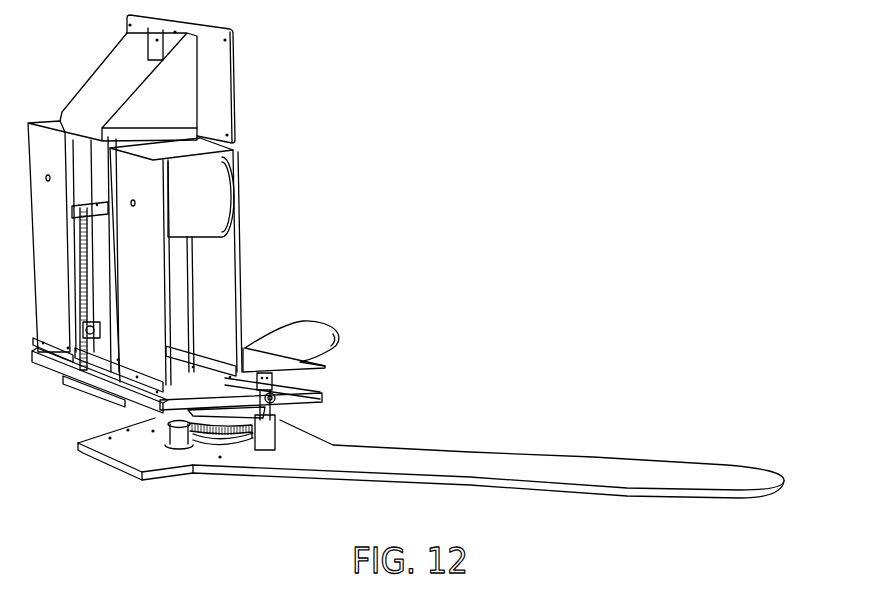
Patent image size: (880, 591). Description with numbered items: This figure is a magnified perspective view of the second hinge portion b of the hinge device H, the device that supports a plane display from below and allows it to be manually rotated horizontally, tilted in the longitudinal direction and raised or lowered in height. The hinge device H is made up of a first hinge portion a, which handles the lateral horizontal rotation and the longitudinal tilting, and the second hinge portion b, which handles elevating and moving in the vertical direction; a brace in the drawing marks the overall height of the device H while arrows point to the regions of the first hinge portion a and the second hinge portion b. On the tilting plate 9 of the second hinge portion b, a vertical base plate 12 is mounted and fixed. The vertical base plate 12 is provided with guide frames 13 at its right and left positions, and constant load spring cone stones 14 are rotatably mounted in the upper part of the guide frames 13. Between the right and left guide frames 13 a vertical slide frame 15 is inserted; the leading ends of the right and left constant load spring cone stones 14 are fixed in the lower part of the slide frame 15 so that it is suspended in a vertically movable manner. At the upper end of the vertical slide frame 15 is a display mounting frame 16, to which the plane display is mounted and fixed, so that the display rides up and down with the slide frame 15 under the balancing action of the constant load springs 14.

The tilting plate 9 is at (265, 358).
The vertical base plate 12 is at (82, 378).
The guide frames 13 is at (217, 278).
The constant load spring cone stones 14 is at (190, 193).
The vertical slide frame 15 is at (82, 177).
The display mounting frame 16 is at (218, 83).
The first hinge portion a is at (349, 394).
The second hinge portion b is at (349, 261).
The hinge device H is at (412, 214).